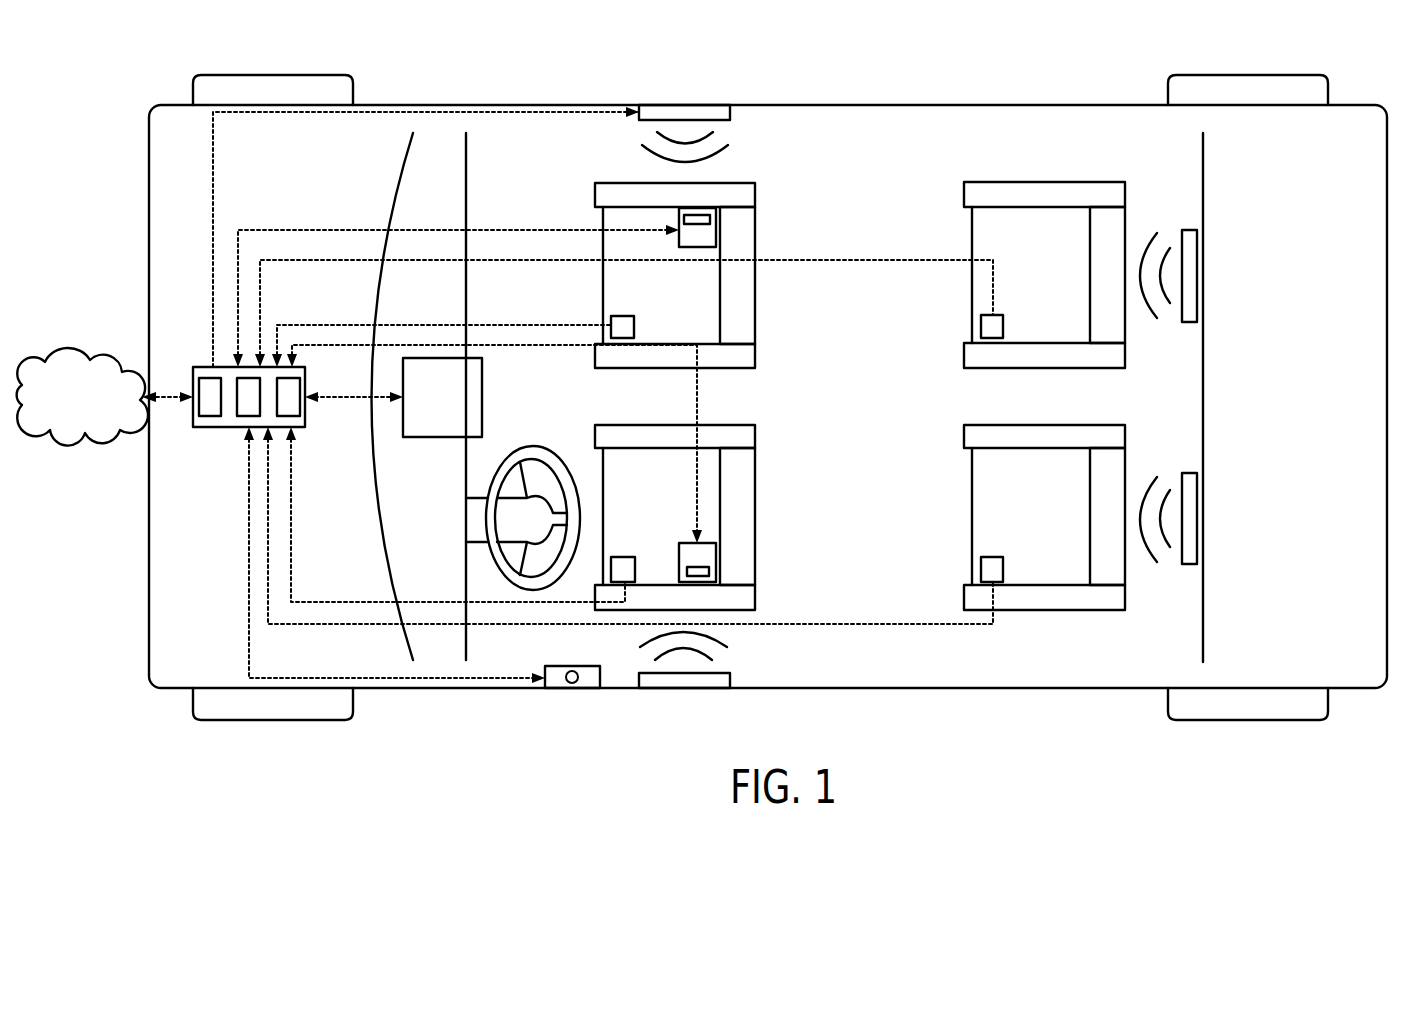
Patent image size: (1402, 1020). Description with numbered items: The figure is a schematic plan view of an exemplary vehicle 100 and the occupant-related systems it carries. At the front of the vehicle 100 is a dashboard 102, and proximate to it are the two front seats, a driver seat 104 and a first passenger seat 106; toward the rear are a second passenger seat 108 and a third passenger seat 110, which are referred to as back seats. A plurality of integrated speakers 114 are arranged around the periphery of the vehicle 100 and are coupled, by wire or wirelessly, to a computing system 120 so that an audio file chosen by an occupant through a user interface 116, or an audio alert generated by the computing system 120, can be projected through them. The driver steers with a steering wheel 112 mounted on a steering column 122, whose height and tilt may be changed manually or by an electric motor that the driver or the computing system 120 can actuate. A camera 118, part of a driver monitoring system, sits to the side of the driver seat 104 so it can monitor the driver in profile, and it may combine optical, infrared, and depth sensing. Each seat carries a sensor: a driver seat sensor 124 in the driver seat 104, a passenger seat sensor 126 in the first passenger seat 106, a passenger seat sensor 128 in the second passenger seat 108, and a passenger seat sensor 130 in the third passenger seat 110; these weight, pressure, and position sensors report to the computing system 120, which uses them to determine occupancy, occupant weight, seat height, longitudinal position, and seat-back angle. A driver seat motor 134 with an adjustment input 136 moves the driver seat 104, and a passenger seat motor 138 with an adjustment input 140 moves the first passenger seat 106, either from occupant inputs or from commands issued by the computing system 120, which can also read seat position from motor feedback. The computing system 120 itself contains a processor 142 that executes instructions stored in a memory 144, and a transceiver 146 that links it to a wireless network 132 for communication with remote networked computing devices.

The vehicle 100 is at (957, 103).
The dashboard 102 is at (440, 203).
The driver seat 104 is at (717, 424).
The first passenger seat 106 is at (703, 182).
The second passenger seat 108 is at (1047, 182).
The third passenger seat 110 is at (1057, 424).
The steering wheel 112 is at (515, 448).
The integrated speakers 114 is at (717, 121).
The user interface 116 is at (460, 408).
The camera 118 is at (572, 666).
The computing system 120 is at (253, 397).
The steering column 122 is at (477, 498).
The driver seat sensor 124 is at (625, 557).
The passenger seat sensor 126 is at (624, 316).
The passenger seat sensor 128 is at (997, 315).
The passenger seat sensor 130 is at (992, 557).
The wireless network 132 is at (95, 408).
The driver seat motor 134 is at (745, 578).
The adjustment input 136 is at (702, 578).
The passenger seat motor 138 is at (708, 197).
The adjustment input 140 is at (690, 215).
The processor 142 is at (303, 407).
The memory 144 is at (247, 427).
The transceiver 146 is at (212, 427).